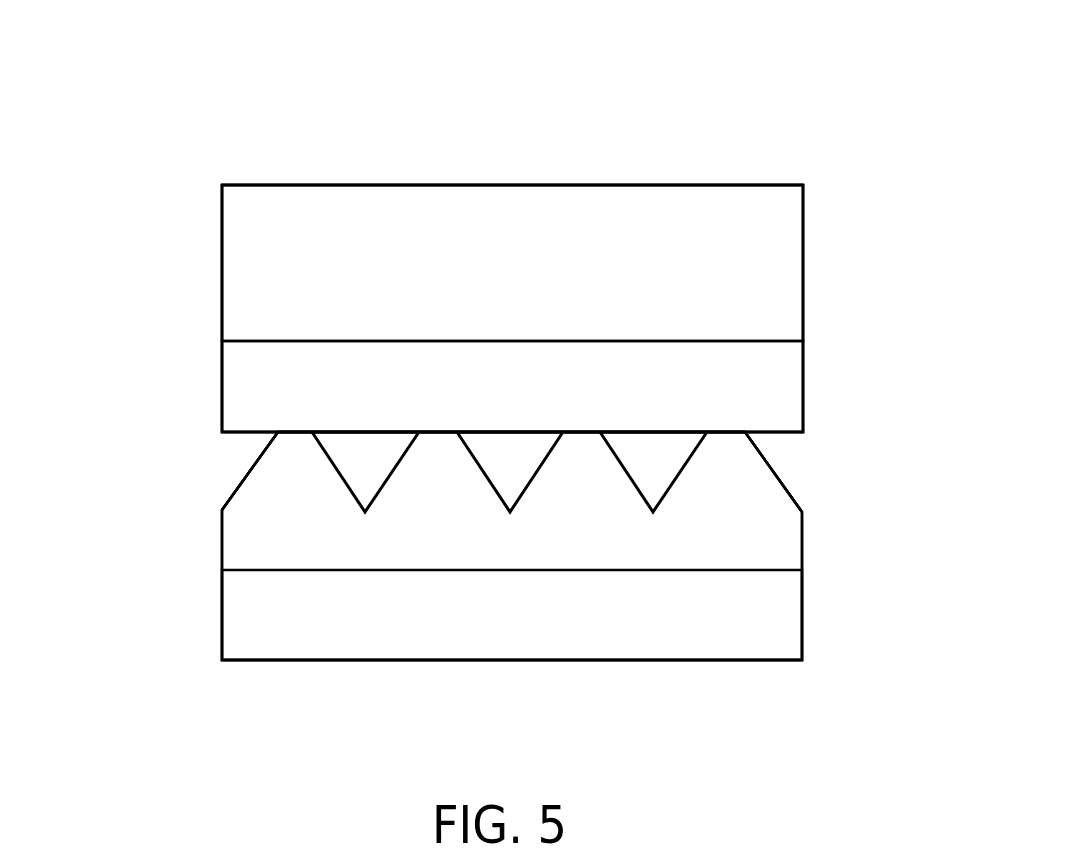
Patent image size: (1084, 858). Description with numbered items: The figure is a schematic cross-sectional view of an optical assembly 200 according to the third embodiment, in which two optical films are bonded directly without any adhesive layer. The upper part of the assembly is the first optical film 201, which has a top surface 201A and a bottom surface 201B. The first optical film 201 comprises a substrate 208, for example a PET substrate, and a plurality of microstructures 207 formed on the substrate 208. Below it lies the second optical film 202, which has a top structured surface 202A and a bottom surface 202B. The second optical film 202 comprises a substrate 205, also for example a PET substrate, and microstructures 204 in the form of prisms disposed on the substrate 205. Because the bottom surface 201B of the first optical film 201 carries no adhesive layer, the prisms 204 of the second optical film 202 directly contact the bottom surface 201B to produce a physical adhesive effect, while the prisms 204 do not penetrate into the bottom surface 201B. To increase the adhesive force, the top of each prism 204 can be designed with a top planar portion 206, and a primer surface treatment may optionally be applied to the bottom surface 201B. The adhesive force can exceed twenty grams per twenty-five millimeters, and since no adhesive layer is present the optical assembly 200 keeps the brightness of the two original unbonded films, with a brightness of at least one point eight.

The optical assembly 200 is at (935, 54).
The first optical film 201 is at (344, 288).
The top surface 201A is at (667, 185).
The bottom surface 201B is at (733, 432).
The microstructures 207 is at (253, 223).
The substrate 208 is at (253, 378).
The top planar portion 206 is at (295, 432).
The second optical film 202 is at (392, 617).
The top structured surface 202A is at (240, 482).
The bottom surface 202B is at (633, 660).
The microstructures 204 is at (303, 473).
The substrate 205 is at (253, 625).